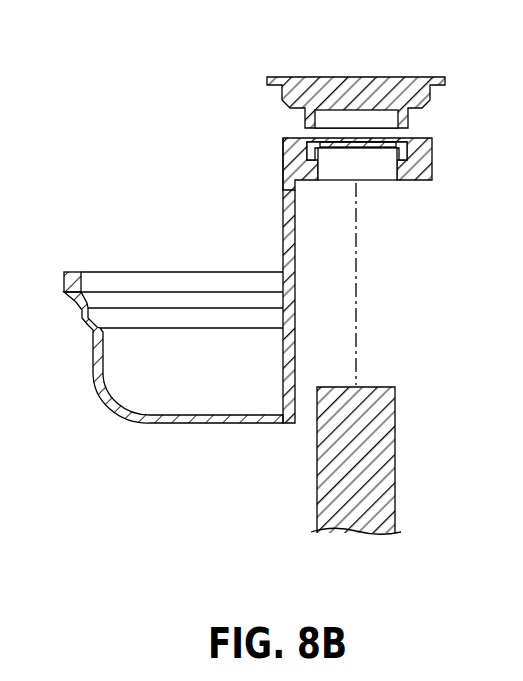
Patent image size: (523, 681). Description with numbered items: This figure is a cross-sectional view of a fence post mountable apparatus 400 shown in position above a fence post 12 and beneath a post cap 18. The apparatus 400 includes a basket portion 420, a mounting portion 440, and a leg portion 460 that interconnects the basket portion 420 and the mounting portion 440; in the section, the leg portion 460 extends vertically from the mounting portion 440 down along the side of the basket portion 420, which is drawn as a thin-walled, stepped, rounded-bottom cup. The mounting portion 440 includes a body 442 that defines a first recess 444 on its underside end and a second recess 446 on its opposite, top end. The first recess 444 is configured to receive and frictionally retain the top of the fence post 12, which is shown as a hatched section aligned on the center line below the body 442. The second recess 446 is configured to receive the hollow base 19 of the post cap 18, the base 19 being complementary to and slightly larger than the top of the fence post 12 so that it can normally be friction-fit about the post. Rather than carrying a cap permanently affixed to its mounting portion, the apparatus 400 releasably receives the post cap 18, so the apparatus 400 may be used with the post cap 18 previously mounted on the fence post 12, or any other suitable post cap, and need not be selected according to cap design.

The fence post 12 is at (317, 479).
The post cap 18 is at (322, 83).
The hollow base 19 is at (313, 116).
The fence post mountable apparatus 400 is at (183, 140).
The basket portion 420 is at (97, 381).
The mounting portion 440 is at (441, 159).
The body 442 is at (403, 178).
The first recess 444 is at (368, 168).
The second recess 446 is at (335, 142).
The leg portion 460 is at (283, 236).